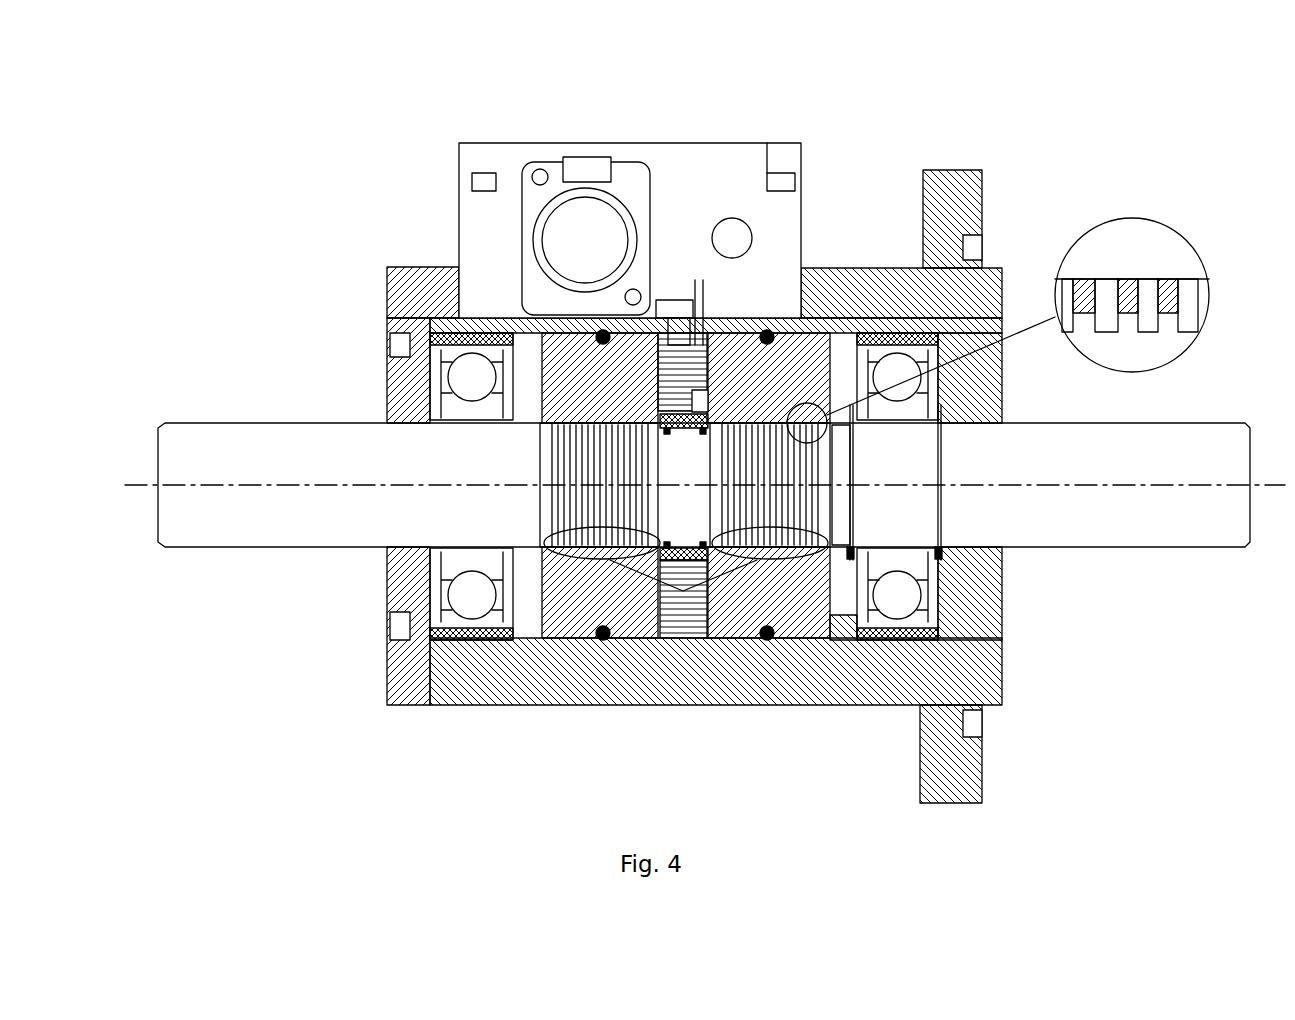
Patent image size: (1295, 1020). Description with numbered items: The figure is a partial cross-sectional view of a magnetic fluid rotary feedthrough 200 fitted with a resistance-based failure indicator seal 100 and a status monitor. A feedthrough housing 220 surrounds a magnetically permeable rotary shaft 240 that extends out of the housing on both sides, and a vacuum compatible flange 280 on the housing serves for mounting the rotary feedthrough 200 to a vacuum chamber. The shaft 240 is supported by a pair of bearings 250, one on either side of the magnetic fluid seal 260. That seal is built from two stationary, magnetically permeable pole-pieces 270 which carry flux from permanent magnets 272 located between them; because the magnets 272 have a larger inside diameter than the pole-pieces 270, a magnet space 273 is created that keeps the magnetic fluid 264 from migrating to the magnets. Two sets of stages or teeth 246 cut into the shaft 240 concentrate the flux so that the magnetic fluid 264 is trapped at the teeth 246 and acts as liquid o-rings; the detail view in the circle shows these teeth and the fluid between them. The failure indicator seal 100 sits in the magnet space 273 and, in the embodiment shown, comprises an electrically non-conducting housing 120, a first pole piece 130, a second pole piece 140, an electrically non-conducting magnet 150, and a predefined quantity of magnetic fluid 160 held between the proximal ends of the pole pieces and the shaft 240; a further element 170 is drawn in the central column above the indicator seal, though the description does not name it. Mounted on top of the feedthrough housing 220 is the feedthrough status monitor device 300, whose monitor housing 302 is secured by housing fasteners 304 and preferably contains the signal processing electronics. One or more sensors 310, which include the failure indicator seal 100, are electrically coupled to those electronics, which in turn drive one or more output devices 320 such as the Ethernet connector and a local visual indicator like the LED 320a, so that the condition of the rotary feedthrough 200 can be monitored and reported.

The failure indicator seal 100 is at (688, 430).
The electrically non-conducting housing 120 is at (705, 405).
The first pole piece 130 is at (665, 405).
The second pole piece 140 is at (705, 412).
The electrically non-conducting magnet 150 is at (683, 546).
The magnetic fluid 160 is at (705, 425).
The bracket 170 is at (697, 403).
The magnetic fluid rotary feedthrough 200 is at (226, 139).
The feedthrough housing 220 is at (390, 265).
The rotary shaft 240 is at (247, 423).
The stages or teeth 246 is at (1085, 323).
The bearings 250 is at (457, 612).
The magnetic fluid seal 260 is at (683, 591).
The magnetic fluid 264 is at (1085, 292).
The pole-pieces 270 is at (573, 618).
The permanent magnets 272 is at (697, 605).
The magnet space 273 is at (683, 547).
The vacuum compatible flange 280 is at (985, 195).
The feedthrough status monitor device 300 is at (459, 140).
The monitor housing 302 is at (459, 218).
The housing fasteners 304 is at (787, 172).
The sensors 310 is at (676, 300).
The output devices 320 is at (607, 243).
The LED 320a is at (752, 238).